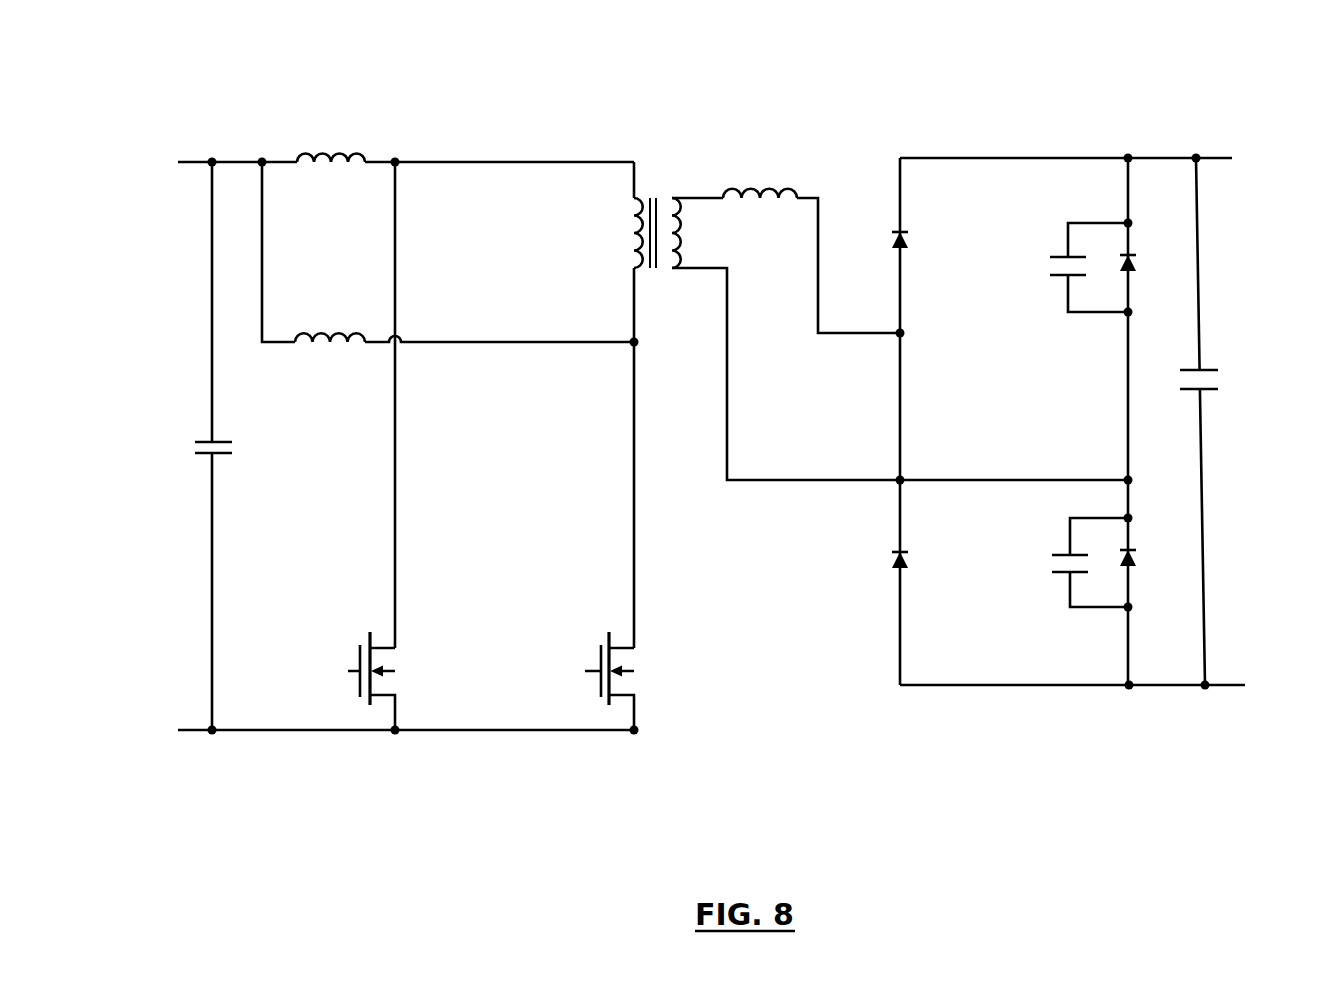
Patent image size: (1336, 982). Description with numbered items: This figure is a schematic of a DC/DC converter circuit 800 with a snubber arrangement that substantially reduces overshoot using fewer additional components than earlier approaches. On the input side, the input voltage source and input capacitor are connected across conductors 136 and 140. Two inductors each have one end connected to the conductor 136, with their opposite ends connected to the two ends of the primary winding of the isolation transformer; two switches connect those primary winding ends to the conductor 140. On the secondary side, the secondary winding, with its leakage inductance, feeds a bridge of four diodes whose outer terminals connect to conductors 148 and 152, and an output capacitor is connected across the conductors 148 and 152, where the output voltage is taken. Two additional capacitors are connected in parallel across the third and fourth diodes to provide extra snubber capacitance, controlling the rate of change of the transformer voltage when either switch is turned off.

The DC/DC converter circuit 800 is at (1110, 82).
The conductor 136 is at (248, 162).
The conductor 140 is at (233, 730).
The conductor 148 is at (1060, 158).
The conductor 152 is at (1047, 685).